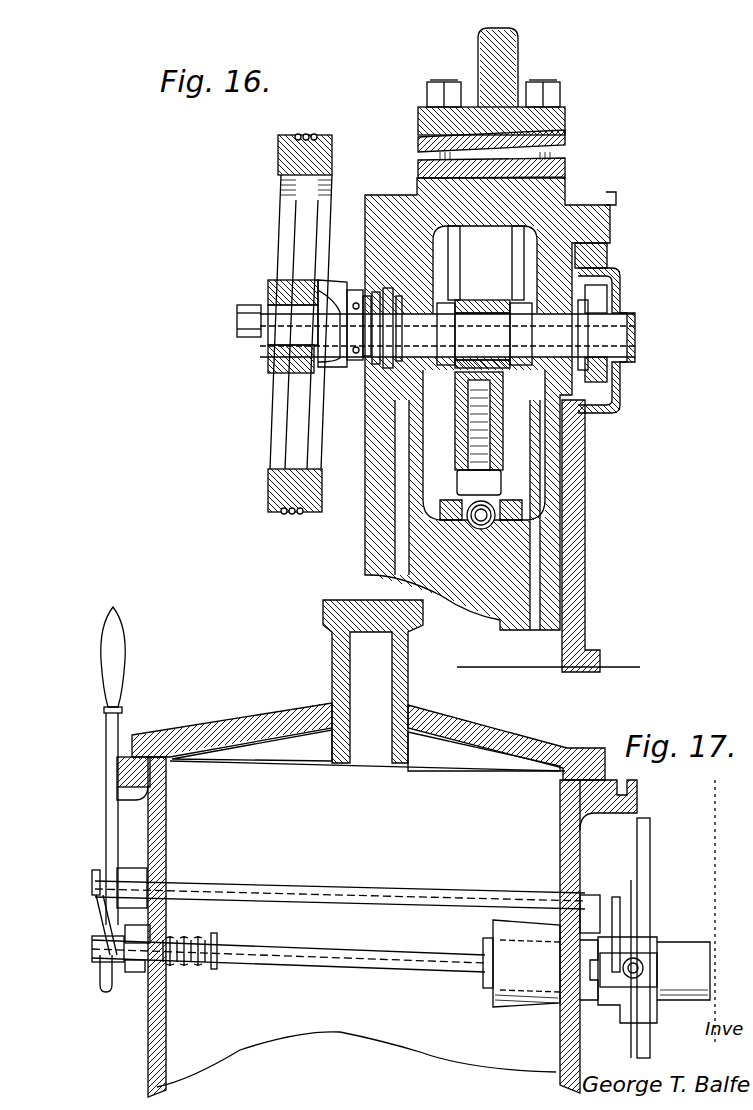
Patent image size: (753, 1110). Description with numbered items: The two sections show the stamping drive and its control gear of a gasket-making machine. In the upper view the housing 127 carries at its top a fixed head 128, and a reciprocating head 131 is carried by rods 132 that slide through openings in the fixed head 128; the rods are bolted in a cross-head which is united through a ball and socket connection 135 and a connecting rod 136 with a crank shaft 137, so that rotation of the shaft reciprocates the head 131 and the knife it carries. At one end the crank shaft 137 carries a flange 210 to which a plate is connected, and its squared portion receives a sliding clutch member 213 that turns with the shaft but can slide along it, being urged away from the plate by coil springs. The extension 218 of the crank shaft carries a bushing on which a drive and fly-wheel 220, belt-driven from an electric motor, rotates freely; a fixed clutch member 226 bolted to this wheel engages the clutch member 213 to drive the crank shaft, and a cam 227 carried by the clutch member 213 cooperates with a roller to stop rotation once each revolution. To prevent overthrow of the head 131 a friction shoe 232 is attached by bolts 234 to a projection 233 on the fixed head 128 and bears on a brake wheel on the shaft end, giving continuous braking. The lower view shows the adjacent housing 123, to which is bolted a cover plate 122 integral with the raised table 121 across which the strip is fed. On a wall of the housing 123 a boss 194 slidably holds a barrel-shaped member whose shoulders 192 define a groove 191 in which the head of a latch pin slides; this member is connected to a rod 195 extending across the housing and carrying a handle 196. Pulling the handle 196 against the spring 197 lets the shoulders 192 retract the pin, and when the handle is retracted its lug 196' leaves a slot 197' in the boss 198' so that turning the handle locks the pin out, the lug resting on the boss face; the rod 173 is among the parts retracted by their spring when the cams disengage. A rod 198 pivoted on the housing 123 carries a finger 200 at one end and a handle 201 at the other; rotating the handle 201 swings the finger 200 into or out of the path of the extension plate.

In FIG. 16, the reciprocating head 131 is at (562, 125).
In FIG. 16, the fixed head 128 is at (566, 185).
In FIG. 16, the connecting rod 136 is at (510, 415).
In FIG. 16, the projection 233 is at (600, 238).
In FIG. 16, the bolts 234 is at (620, 263).
In FIG. 16, the friction shoe 232 is at (602, 289).
In FIG. 16, the flange 210 is at (378, 322).
In FIG. 16, the crank shaft 137 is at (473, 328).
In FIG. 16, the rods 132 is at (520, 282).
In FIG. 16, the ball and socket connection 135 is at (487, 518).
In FIG. 16, the housing 127 is at (587, 580).
In FIG. 16, the sliding clutch member 213 is at (343, 278).
In FIG. 16, the drive and fly-wheel 220 is at (290, 376).
In FIG. 16, the cam 227 is at (268, 362).
In FIG. 16, the fixed clutch member 226 is at (323, 317).
In FIG. 16, the extension of the crank shaft 218 is at (290, 312).
In FIG. 17, the table 121 is at (360, 668).
In FIG. 17, the cover plate 122 is at (525, 745).
In FIG. 17, the housing 123 is at (566, 835).
In FIG. 17, the handle 201 is at (106, 797).
In FIG. 17, the rod 198 is at (340, 888).
In FIG. 17, the boss 198' is at (93, 912).
In FIG. 17, the slot 197' is at (170, 924).
In FIG. 17, the rod 195 is at (372, 962).
In FIG. 17, the spring 197 is at (190, 968).
In FIG. 17, the handle 196 is at (82, 973).
In FIG. 17, the lug 196' is at (110, 984).
In FIG. 17, the boss 194 is at (512, 1000).
In FIG. 17, the shoulders 192 is at (582, 948).
In FIG. 17, the rod 173 is at (644, 970).
In FIG. 17, the finger 200 is at (616, 960).
In FIG. 17, the groove 191 is at (583, 1010).